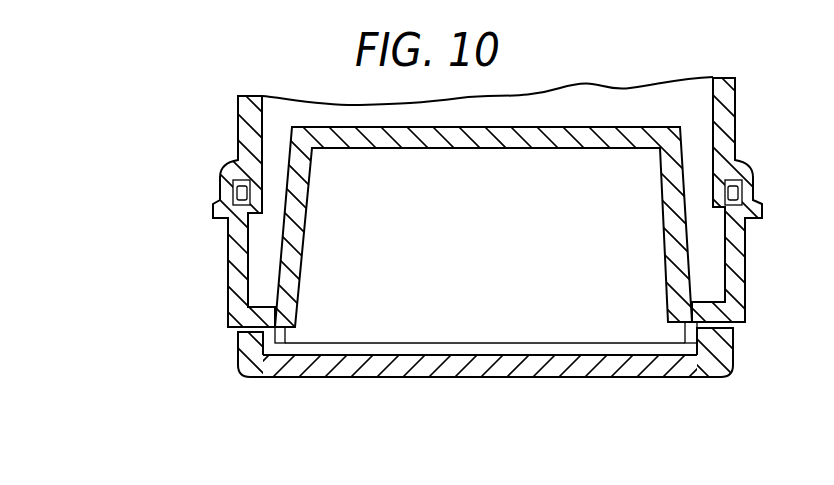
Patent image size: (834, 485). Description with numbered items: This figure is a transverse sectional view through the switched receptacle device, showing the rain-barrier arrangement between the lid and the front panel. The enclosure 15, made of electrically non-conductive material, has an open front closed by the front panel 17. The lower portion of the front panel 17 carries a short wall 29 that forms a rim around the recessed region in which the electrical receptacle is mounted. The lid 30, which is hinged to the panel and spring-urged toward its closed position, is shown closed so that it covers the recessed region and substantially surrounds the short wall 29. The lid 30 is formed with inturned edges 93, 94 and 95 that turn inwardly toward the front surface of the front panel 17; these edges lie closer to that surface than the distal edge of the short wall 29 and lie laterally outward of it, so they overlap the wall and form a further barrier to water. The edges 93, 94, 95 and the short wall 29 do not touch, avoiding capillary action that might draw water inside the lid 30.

The enclosure 15 is at (737, 120).
The front panel 17 is at (227, 240).
The short wall 29 is at (688, 346).
The lid 30 is at (408, 378).
The edge 93 is at (238, 347).
The edge 94 is at (672, 297).
The edge 95 is at (734, 343).